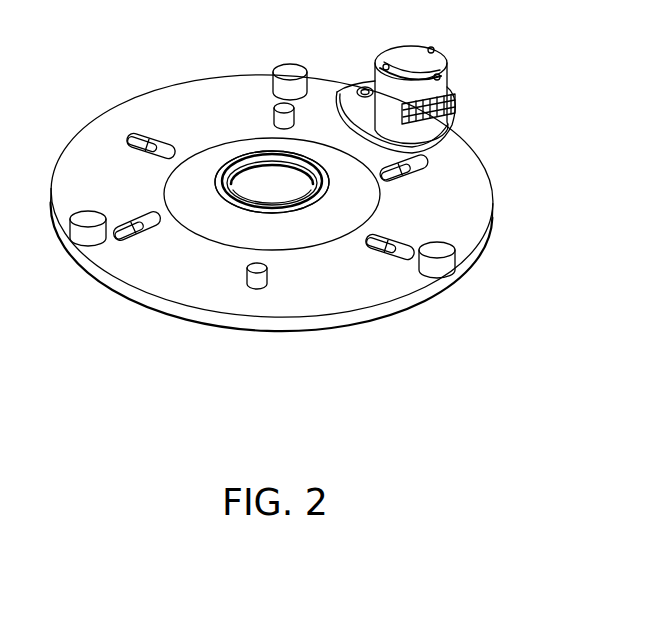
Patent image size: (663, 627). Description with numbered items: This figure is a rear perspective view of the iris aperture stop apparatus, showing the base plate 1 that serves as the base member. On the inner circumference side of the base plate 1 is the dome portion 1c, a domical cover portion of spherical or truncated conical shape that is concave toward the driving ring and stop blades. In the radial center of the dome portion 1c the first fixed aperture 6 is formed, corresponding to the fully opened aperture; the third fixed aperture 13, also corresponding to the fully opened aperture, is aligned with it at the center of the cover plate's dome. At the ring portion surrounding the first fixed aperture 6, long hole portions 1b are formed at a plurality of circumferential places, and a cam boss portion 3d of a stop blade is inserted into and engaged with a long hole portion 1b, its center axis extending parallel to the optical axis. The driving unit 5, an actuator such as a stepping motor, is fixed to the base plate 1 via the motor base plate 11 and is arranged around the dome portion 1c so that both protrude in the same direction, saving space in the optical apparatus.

The base plate 1 is at (342, 302).
The long hole portion 1b is at (247, 278).
The dome portion 1c is at (200, 212).
The cam boss portion 3d is at (260, 290).
The driving unit 5 is at (444, 56).
The first fixed aperture 6 is at (262, 197).
The third fixed aperture 13 is at (262, 197).
The motor base plate 11 is at (337, 88).